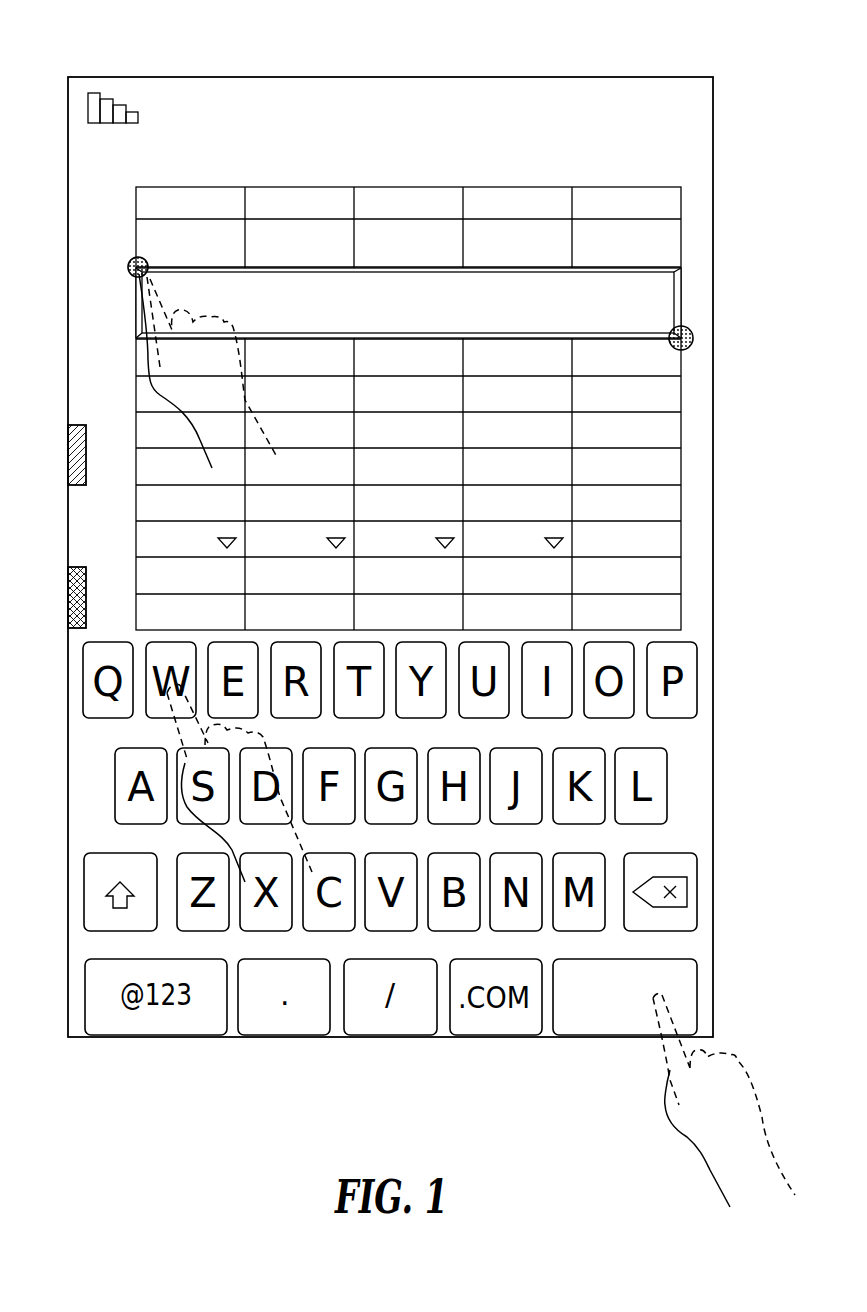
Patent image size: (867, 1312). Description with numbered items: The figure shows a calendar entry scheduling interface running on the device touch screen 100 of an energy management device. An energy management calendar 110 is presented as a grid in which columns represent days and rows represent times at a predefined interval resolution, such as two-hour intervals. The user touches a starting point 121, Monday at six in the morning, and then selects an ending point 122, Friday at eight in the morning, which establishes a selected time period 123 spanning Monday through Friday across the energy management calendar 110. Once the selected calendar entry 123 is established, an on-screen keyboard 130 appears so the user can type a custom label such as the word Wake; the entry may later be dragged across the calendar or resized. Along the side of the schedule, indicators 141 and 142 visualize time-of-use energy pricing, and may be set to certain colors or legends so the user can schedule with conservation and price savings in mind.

The device touch screen 100 is at (618, 46).
The energy management calendar 110 is at (410, 187).
The starting point 121 is at (128, 264).
The ending point 122 is at (695, 338).
The selected time period 123 is at (660, 303).
The on-screen keyboard 130 is at (697, 1000).
The indicator 141 is at (78, 455).
The indicator 142 is at (78, 598).